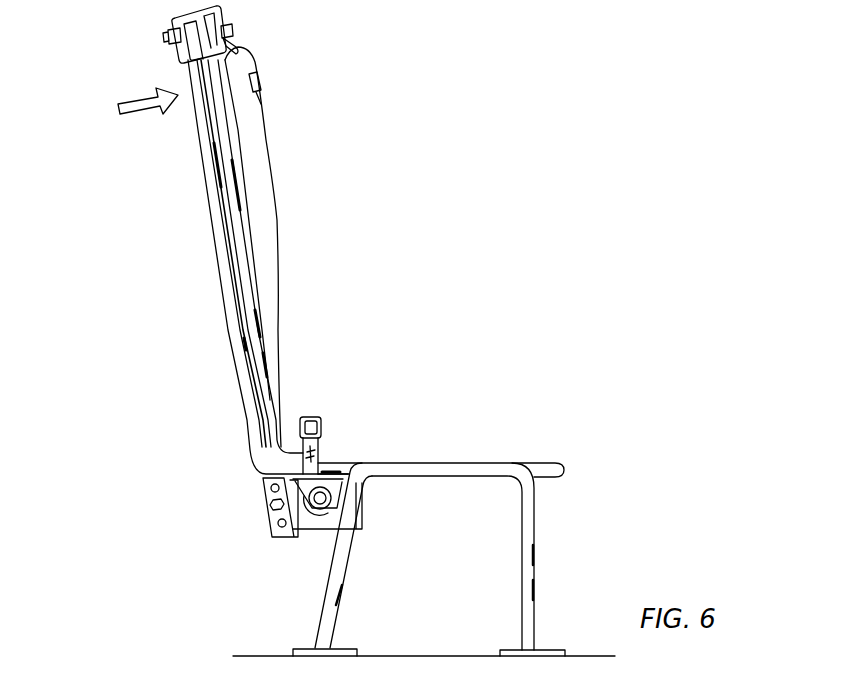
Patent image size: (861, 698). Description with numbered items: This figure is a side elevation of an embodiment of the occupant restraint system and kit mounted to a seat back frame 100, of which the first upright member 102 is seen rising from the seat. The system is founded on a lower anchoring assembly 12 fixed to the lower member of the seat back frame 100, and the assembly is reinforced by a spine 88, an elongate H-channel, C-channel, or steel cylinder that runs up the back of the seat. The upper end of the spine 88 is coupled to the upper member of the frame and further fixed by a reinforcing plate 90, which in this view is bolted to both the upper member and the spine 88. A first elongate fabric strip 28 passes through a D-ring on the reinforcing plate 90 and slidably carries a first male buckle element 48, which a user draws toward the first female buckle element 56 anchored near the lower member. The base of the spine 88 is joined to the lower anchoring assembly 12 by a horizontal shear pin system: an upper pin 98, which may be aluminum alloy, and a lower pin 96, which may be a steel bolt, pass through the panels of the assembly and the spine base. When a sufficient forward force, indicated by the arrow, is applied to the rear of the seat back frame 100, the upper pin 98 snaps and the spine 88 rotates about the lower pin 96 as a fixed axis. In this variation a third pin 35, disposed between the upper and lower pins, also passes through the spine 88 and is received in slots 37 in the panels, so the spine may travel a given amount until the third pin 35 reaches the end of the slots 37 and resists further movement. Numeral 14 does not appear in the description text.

The lower anchoring assembly 12 is at (300, 545).
The seat back assembly 14 is at (243, 18).
The first elongate fabric strip 28 is at (277, 223).
The third pin 35 is at (272, 505).
The slots 37 is at (274, 509).
The first male buckle element 48 is at (262, 83).
The first female buckle element 56 is at (316, 418).
The spine 88 is at (236, 152).
The reinforcing plate 90 is at (177, 15).
The lower pin 96 is at (279, 529).
The upper pin 98 is at (271, 488).
The seat back frame 100 is at (178, 170).
The first upright member 102 is at (214, 234).